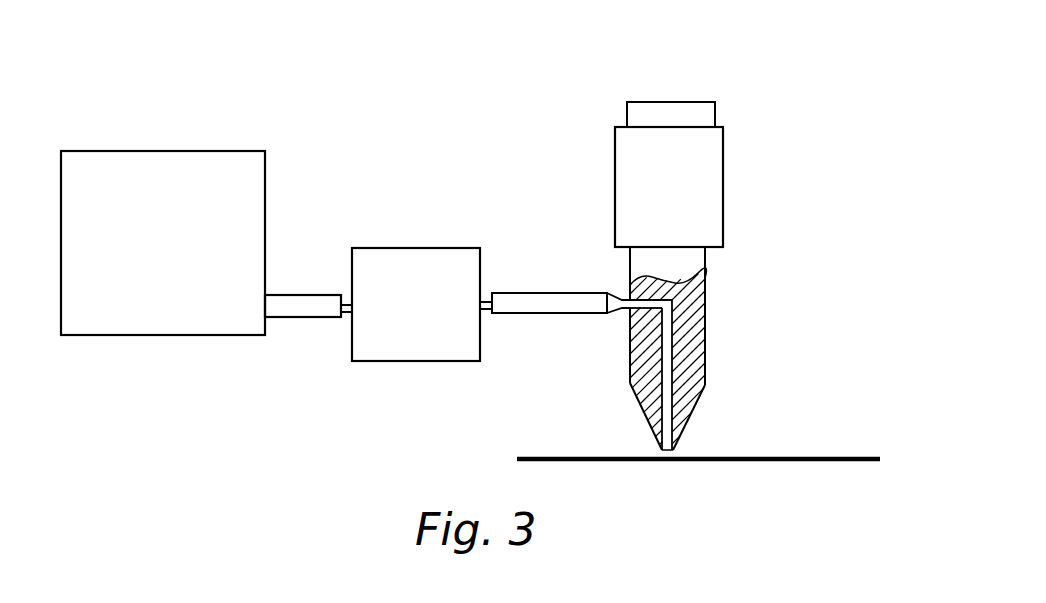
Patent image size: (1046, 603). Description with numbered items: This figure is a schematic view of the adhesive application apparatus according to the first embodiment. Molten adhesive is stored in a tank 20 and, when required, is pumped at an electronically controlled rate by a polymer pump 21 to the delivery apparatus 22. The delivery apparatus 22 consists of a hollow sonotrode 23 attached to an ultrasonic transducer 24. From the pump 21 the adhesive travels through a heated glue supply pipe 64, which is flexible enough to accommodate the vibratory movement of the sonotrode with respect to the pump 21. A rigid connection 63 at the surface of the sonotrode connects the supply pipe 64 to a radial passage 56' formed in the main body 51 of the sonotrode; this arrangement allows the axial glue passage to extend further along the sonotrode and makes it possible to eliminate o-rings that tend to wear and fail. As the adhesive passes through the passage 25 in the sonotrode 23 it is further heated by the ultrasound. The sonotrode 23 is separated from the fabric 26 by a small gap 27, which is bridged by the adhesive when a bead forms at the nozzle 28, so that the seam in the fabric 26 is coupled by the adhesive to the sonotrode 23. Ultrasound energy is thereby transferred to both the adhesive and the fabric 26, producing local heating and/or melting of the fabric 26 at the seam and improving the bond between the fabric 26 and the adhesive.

The tank 20 is at (157, 151).
The polymer pump 21 is at (388, 248).
The heated glue supply pipe 64 is at (496, 293).
The rigid connection 63 is at (628, 297).
The ultrasonic transducer 24 is at (725, 180).
The delivery apparatus 22 is at (732, 77).
The main body 51 is at (705, 302).
The hollow sonotrode 23 is at (705, 358).
The passage 25 is at (673, 385).
The radial passage 56' is at (607, 359).
The gap 27 is at (690, 449).
The nozzle 28 is at (662, 452).
The fabric 26 is at (827, 458).